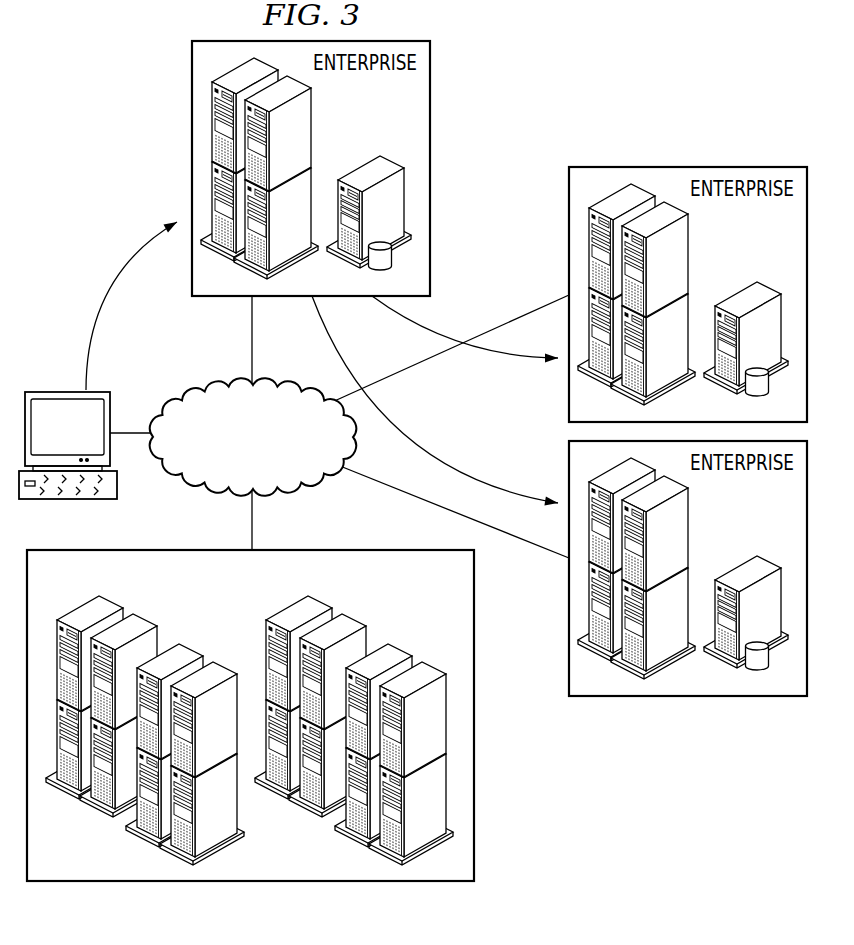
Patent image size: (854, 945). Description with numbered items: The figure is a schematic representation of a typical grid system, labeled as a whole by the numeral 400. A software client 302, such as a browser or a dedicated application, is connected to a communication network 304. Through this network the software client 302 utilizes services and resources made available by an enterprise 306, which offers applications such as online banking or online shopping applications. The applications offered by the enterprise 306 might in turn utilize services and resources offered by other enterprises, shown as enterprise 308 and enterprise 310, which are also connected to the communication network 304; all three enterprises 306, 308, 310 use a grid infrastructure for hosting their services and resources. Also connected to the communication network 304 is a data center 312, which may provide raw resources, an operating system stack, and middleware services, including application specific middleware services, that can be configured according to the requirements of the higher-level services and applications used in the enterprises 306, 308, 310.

The software client 302 is at (44, 392).
The communication network 304 is at (162, 393).
The enterprise 306 is at (190, 90).
The enterprise 308 is at (689, 167).
The enterprise 310 is at (688, 697).
The data center 312 is at (162, 883).
The network environment 400 is at (554, 934).